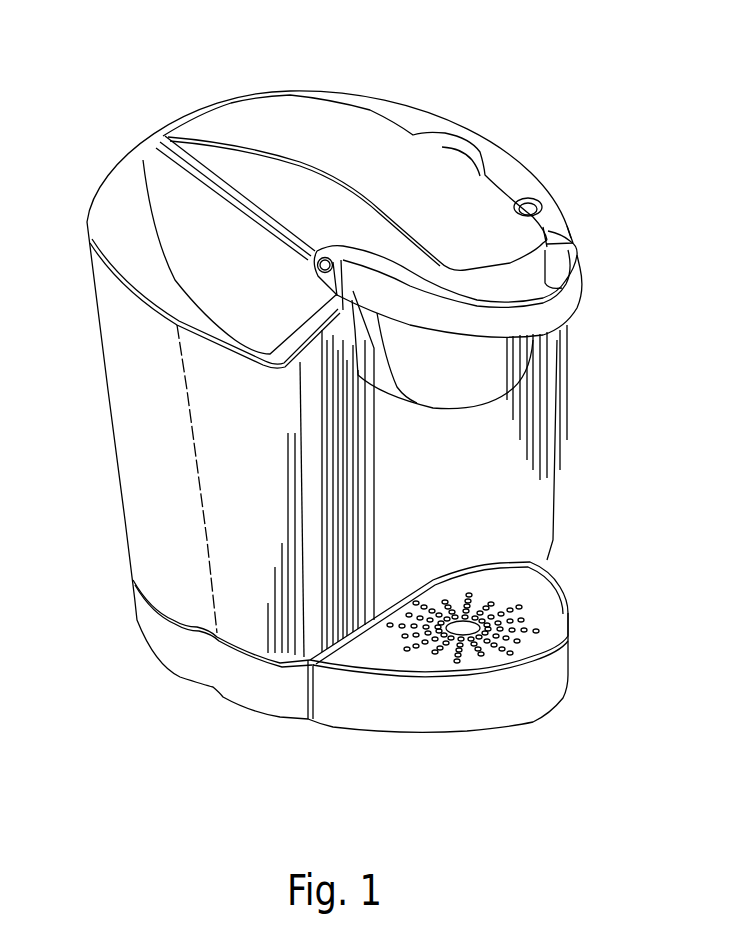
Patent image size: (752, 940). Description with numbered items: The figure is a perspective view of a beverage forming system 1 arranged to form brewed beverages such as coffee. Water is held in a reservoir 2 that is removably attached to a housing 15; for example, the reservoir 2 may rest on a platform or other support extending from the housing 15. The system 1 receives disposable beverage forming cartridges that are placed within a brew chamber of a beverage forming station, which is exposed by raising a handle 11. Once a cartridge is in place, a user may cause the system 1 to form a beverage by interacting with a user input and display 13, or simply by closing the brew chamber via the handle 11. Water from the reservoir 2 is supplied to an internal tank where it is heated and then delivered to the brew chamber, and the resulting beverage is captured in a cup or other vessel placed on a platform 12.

The beverage forming system 1 is at (164, 70).
The reservoir 2 is at (127, 417).
The handle 11 is at (567, 276).
The platform 12 is at (543, 620).
The user input and display 13 is at (470, 146).
The housing 15 is at (547, 506).